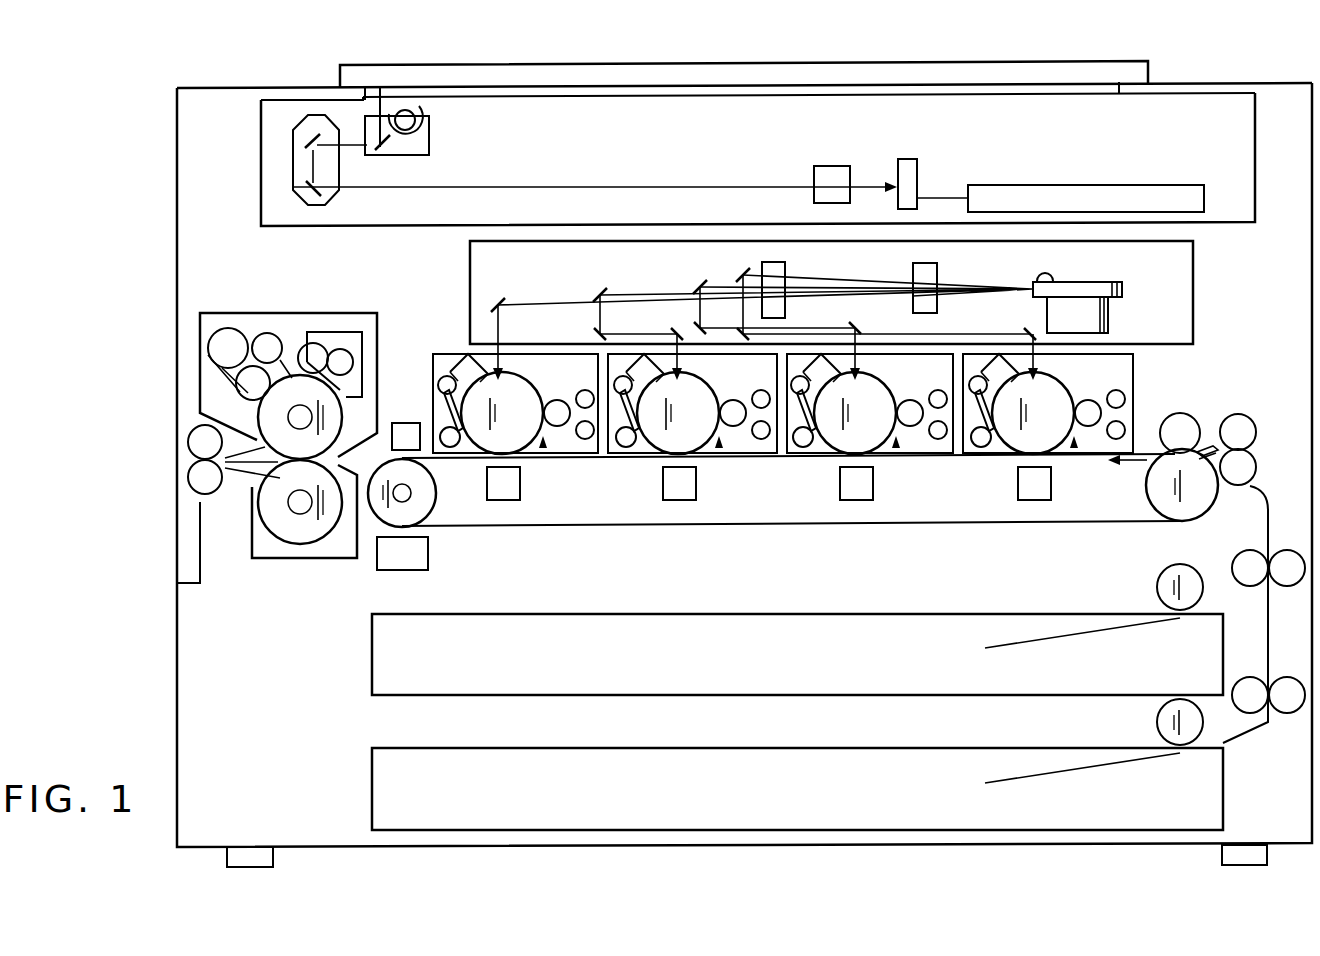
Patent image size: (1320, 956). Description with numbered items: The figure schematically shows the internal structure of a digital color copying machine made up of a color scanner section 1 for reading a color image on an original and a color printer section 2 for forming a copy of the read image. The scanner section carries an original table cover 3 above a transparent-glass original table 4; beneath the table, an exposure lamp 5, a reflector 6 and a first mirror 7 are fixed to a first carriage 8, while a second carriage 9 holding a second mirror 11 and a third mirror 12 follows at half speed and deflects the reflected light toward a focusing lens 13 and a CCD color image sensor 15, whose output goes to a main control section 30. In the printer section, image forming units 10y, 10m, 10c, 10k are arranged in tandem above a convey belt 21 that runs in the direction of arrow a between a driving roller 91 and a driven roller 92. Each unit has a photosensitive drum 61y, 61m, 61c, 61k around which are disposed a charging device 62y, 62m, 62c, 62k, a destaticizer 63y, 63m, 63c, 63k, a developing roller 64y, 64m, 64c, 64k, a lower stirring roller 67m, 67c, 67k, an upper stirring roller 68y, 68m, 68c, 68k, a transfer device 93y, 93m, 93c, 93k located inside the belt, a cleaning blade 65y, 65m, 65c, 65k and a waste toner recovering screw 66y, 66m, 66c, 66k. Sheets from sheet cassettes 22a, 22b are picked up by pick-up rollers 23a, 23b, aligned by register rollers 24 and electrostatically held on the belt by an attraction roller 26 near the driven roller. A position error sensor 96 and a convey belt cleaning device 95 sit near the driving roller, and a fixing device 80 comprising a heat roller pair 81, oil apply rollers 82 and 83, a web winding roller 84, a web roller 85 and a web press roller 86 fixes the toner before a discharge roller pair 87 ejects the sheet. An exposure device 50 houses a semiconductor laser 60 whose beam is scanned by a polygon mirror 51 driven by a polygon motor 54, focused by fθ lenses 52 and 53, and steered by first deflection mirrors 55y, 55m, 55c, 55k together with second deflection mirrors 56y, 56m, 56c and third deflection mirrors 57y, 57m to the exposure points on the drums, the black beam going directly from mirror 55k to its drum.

The color scanner section 1 is at (643, 112).
The color printer section 2 is at (455, 265).
The original table cover 3 is at (565, 72).
The original table 4 is at (605, 94).
The exposure lamp 5 is at (418, 118).
The reflector 6 is at (1020, 526).
The first mirror 7 is at (383, 147).
The first carriage 8 is at (429, 150).
The second carriage 9 is at (340, 195).
The image forming unit 10k is at (515, 425).
The image forming unit 10c is at (692, 425).
The image forming unit 10m is at (870, 425).
The image forming unit 10y is at (1048, 425).
The second mirror 11 is at (303, 142).
The third mirror 12 is at (305, 185).
The focusing lens 13 is at (828, 166).
The CCD color image sensor 15 is at (906, 159).
The convey belt 21 is at (1133, 452).
The sheet cassette 22a is at (372, 653).
The sheet cassette 22b is at (372, 788).
The pick-up roller 23a is at (1157, 587).
The pick-up roller 23b is at (1157, 722).
The register rollers 24 is at (1238, 414).
The attraction roller 26 is at (1182, 413).
The main control section 30 is at (1080, 185).
The exposure device 50 is at (1193, 275).
The polygon mirror 51 is at (1122, 290).
The fθ lens 52 is at (938, 268).
The fθ lens 53 is at (786, 265).
The polygon motor 54 is at (1108, 318).
The first deflection mirror 55k is at (497, 300).
The first deflection mirror 55c is at (600, 290).
The first deflection mirror 55m is at (698, 283).
The first deflection mirror 55y is at (742, 272).
The second deflection mirror 56c is at (596, 330).
The second deflection mirror 56m is at (698, 323).
The second deflection mirror 56y is at (738, 333).
The third deflection mirror 57m is at (857, 320).
The third deflection mirror 57y is at (1028, 325).
The semiconductor laser 60 is at (1052, 276).
The photosensitive drum 61k is at (538, 390).
The photosensitive drum 61c is at (715, 390).
The photosensitive drum 61m is at (892, 390).
The photosensitive drum 61y is at (1068, 390).
The charging device 62k is at (450, 352).
The charging device 62c is at (640, 355).
The charging device 62m is at (835, 358).
The charging device 62y is at (1000, 355).
The destaticizer 63k is at (440, 380).
The destaticizer 63c is at (615, 380).
The destaticizer 63m is at (805, 378).
The destaticizer 63y is at (985, 380).
The developing roller 64k is at (548, 450).
The developing roller 64c is at (725, 450).
The developing roller 64m is at (902, 450).
The developing roller 64y is at (1092, 448).
The cleaning blade 65k is at (445, 400).
The cleaning blade 65c is at (632, 445).
The cleaning blade 65m is at (809, 445).
The cleaning blade 65y is at (990, 445).
The waste toner recovering screw 66k is at (450, 448).
The waste toner recovering screw 66c is at (626, 448).
The waste toner recovering screw 66m is at (803, 448).
The waste toner recovering screw 66y is at (981, 448).
The lower stirring roller 67k is at (557, 430).
The lower stirring roller 67c is at (735, 430).
The lower stirring roller 67m is at (912, 430).
The upper stirring roller 68k is at (580, 392).
The upper stirring roller 68c is at (757, 392).
The upper stirring roller 68m is at (934, 392).
The upper stirring roller 68y is at (1112, 392).
The fixing device 80 is at (386, 326).
The heat roller pair 81 is at (300, 545).
The oil apply roller 82 is at (340, 349).
The oil apply roller 83 is at (313, 343).
The web winding roller 84 is at (267, 333).
The web roller 85 is at (228, 328).
The web press roller 86 is at (243, 392).
The discharge roller pair 87 is at (210, 494).
The driving roller 91 is at (436, 500).
The driven roller 92 is at (1190, 522).
The transfer device 93k is at (520, 500).
The transfer device 93c is at (697, 500).
The transfer device 93m is at (873, 500).
The transfer device 93y is at (1052, 500).
The convey belt cleaning device 95 is at (428, 552).
The position error sensor 96 is at (392, 448).
The arrow a is at (1127, 470).